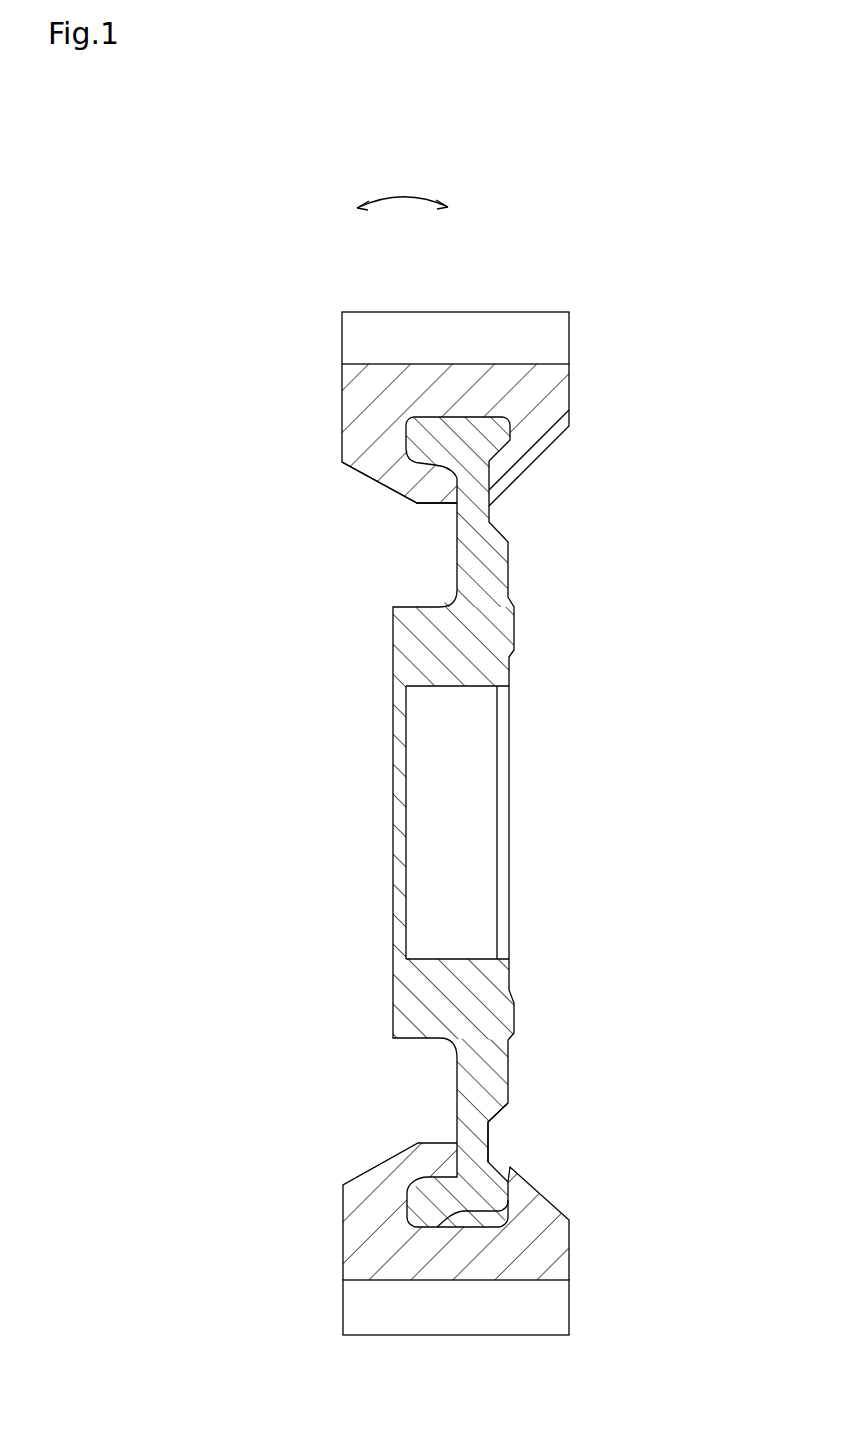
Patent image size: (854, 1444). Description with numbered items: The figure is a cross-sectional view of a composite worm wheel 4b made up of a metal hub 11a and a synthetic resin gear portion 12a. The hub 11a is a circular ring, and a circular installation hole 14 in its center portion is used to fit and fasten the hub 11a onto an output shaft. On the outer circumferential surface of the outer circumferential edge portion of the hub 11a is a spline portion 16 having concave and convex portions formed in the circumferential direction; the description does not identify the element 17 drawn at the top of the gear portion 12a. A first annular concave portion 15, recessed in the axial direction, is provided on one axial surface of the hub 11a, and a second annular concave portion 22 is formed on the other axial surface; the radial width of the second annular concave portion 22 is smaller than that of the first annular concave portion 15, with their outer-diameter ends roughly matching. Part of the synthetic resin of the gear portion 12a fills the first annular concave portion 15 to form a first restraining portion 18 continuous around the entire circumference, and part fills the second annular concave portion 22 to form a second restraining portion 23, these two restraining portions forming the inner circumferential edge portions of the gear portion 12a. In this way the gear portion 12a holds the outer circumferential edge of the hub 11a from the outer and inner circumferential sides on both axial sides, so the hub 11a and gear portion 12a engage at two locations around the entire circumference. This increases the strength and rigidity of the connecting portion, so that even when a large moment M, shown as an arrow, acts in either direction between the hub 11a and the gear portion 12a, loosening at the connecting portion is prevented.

The moment M is at (401, 197).
The worm wheel 4b is at (567, 302).
The top plate 17 is at (374, 340).
The gear portion 12a is at (533, 390).
The first restraining portion 18 is at (407, 477).
The spline portion 16 is at (470, 432).
The first annular concave portion 15 is at (456, 541).
The hub 11a is at (508, 597).
The installation hole 14 is at (452, 687).
The second annular concave portion 22 is at (512, 1106).
The second restraining portion 23 is at (515, 1168).